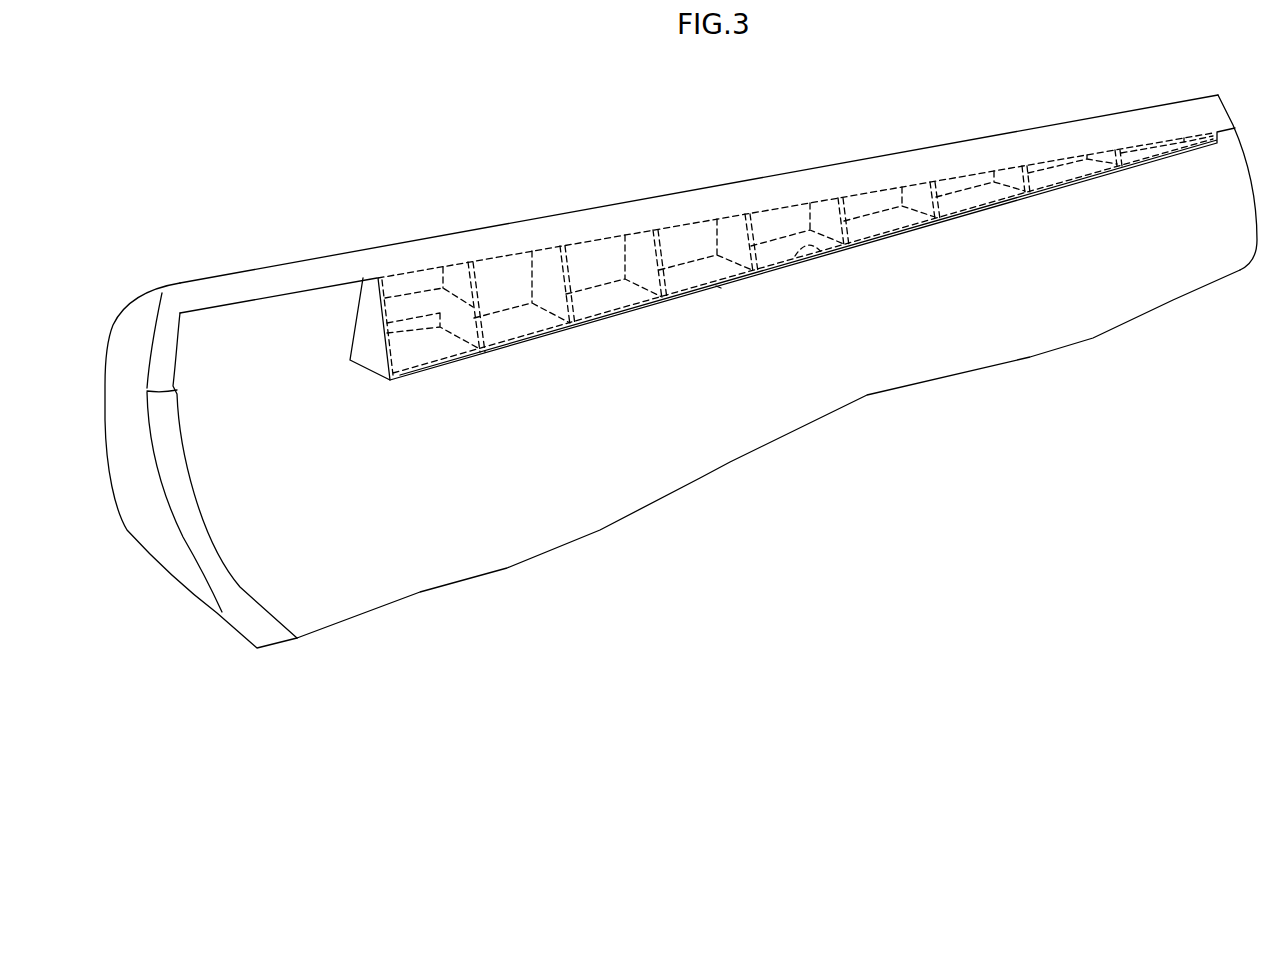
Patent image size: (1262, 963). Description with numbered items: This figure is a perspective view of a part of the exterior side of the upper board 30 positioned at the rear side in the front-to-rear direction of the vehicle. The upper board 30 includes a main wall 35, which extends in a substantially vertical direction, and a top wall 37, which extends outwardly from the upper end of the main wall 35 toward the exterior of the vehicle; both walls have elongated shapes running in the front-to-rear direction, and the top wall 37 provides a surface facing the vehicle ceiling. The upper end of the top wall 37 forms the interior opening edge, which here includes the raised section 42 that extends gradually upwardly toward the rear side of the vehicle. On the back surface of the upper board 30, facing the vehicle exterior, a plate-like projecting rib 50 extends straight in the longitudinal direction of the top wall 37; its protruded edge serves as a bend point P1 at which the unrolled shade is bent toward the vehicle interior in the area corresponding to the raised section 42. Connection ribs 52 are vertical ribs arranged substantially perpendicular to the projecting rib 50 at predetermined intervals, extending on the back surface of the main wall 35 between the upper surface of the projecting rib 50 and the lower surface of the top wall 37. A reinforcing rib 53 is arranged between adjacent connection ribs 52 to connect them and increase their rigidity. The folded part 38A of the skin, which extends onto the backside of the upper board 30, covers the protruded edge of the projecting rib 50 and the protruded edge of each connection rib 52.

The upper board 30 is at (209, 269).
The main wall 35 is at (495, 547).
The top wall 37 is at (266, 284).
The raised section 42 is at (395, 243).
The folded part 38A is at (693, 243).
The projecting rib 50 is at (826, 257).
The connection rib 52 is at (629, 258).
The reinforcing rib 53 is at (415, 305).
The bend point P1 is at (718, 287).